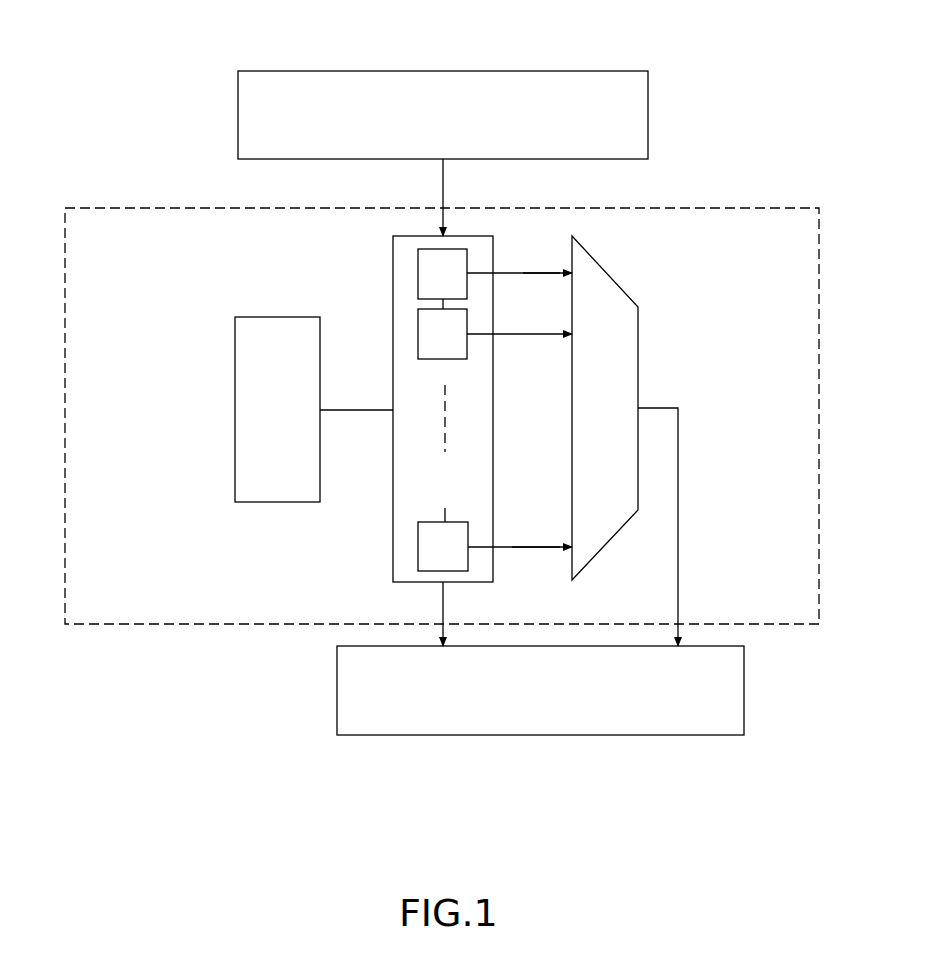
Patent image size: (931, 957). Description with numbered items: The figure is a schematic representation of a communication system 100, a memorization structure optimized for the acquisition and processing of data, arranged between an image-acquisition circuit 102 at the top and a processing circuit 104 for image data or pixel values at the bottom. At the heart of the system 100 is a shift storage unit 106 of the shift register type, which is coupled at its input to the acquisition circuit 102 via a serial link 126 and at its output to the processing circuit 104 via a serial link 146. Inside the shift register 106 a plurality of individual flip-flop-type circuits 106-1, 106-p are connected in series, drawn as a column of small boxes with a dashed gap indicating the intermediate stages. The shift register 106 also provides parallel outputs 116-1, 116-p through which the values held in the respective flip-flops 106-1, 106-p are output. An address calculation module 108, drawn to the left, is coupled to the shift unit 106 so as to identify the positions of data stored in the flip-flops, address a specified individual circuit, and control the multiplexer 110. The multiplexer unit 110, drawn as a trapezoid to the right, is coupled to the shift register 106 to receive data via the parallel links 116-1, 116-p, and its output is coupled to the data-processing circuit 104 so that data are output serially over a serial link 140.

The communication system 100 is at (178, 624).
The image-acquisition circuit 102 is at (350, 68).
The processing circuit 104 is at (405, 737).
The shift storage unit 106 is at (392, 268).
The flip-flop circuit 106-1 is at (418, 280).
The flip-flop circuit 106-p is at (418, 549).
The address calculation module 108 is at (235, 393).
The multiplexer unit 110 is at (628, 297).
The parallel output 116-1 is at (523, 268).
The parallel output 116-p is at (512, 552).
The serial link 126 is at (446, 192).
The serial link 140 is at (680, 580).
The serial link 146 is at (443, 594).